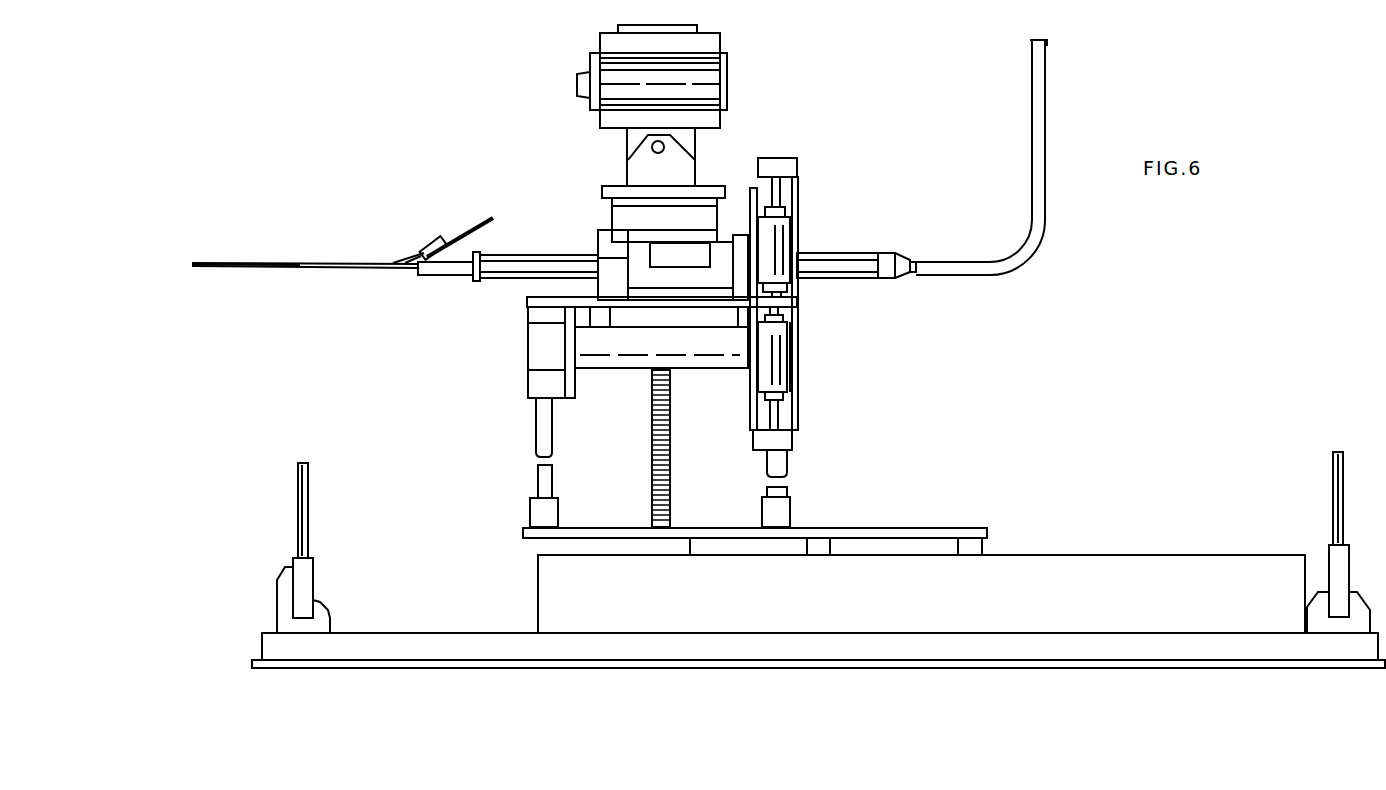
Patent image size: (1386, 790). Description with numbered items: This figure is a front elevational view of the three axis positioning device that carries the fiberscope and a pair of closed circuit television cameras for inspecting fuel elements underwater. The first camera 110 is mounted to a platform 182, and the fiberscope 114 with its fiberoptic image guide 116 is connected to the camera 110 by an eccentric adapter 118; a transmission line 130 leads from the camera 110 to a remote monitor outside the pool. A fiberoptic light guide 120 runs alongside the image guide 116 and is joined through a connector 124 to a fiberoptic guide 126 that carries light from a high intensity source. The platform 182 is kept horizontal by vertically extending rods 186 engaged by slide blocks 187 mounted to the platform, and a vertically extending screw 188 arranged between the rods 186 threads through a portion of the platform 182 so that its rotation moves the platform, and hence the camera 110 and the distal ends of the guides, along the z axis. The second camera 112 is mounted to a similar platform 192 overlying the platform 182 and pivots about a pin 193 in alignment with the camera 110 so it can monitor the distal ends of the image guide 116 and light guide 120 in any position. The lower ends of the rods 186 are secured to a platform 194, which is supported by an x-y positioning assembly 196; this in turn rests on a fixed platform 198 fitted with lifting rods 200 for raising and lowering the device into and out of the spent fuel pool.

The closed circuit television camera 110 is at (703, 257).
The second television camera 112 is at (722, 72).
The fiberscope 114 is at (457, 272).
The fiberoptic image guide 116 is at (324, 269).
The eccentric adapter 118 is at (513, 257).
The fiberoptic light guide 120 is at (274, 262).
The connector 124 is at (423, 251).
The fiberoptic guide 126 is at (462, 228).
The transmission line 130 is at (1042, 182).
The platform 182 is at (690, 312).
The vertically extending rods 186 is at (540, 486).
The slide blocks 187 is at (548, 354).
The vertically extending screw 188 is at (653, 487).
The platform 192 is at (690, 190).
The pin 193 is at (652, 147).
The platform 194 is at (857, 528).
The x-y positioning assembly 196 is at (538, 587).
The fixed platform 198 is at (352, 642).
The lifting rods 200 is at (303, 532).